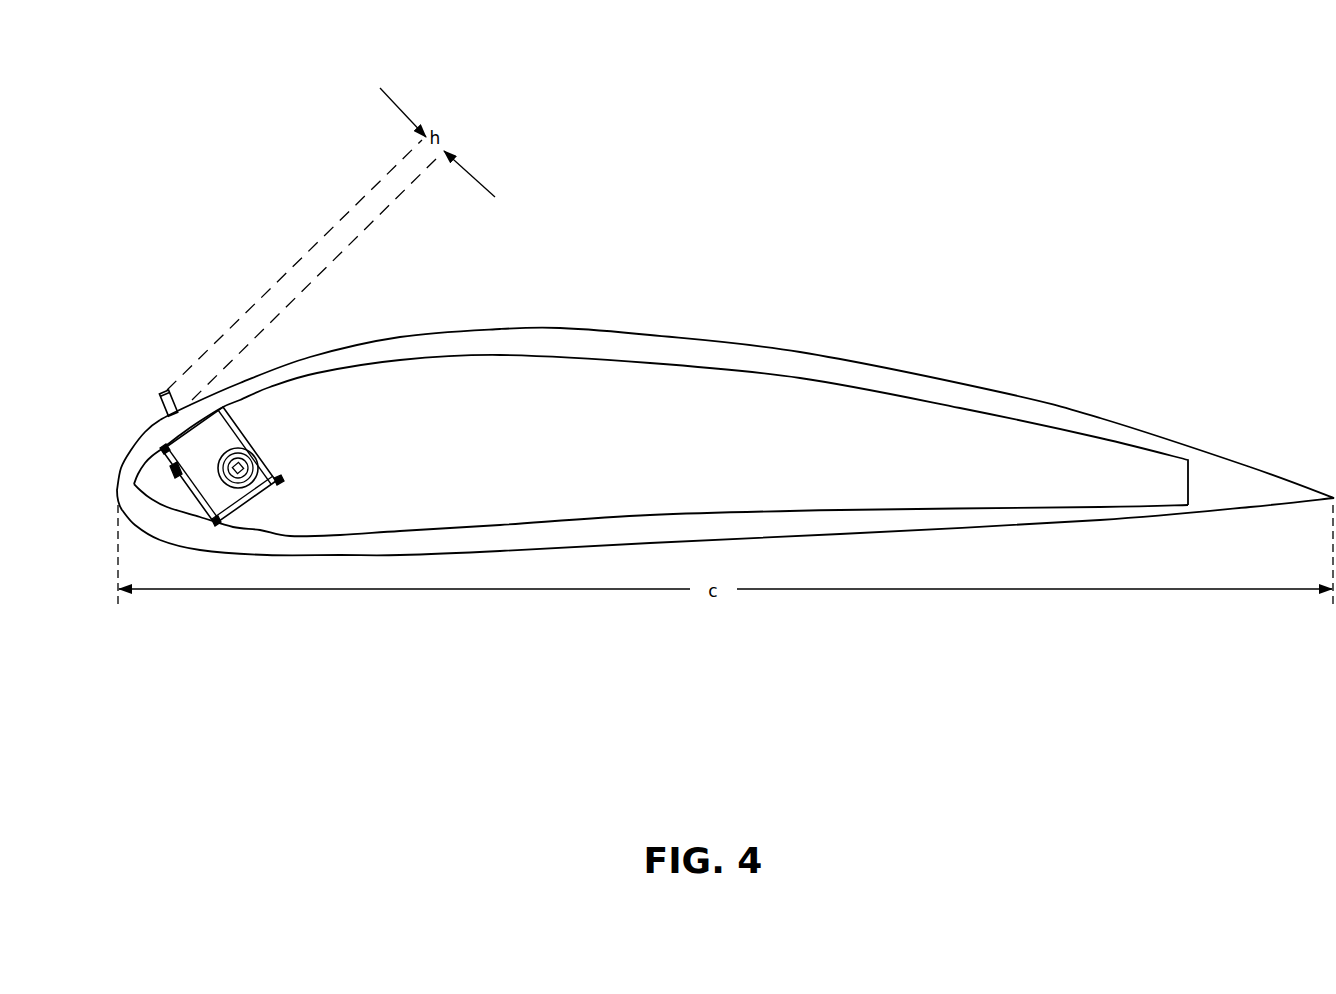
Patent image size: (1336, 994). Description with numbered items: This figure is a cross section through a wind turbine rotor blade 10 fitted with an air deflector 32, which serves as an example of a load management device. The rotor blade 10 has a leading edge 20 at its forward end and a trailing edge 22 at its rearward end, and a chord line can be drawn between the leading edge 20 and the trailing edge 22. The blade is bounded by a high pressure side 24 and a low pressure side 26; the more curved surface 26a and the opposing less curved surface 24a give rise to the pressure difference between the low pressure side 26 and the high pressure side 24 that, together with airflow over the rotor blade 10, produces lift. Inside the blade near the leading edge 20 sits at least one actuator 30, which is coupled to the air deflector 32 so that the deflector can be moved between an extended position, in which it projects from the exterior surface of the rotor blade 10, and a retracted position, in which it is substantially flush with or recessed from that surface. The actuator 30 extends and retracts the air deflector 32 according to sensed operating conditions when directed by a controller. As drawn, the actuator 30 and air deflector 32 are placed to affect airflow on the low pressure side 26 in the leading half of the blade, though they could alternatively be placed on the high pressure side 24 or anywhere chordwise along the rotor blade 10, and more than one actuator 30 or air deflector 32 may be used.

The rotor blade 10 is at (941, 333).
The leading edge 20 is at (116, 492).
The trailing edge 22 is at (1327, 504).
The high pressure side 24 is at (576, 548).
The less curved surface 24a is at (700, 541).
The low pressure side 26 is at (554, 328).
The more curved surface 26a is at (651, 335).
The actuator 30 is at (262, 448).
The air deflector 32 is at (159, 403).